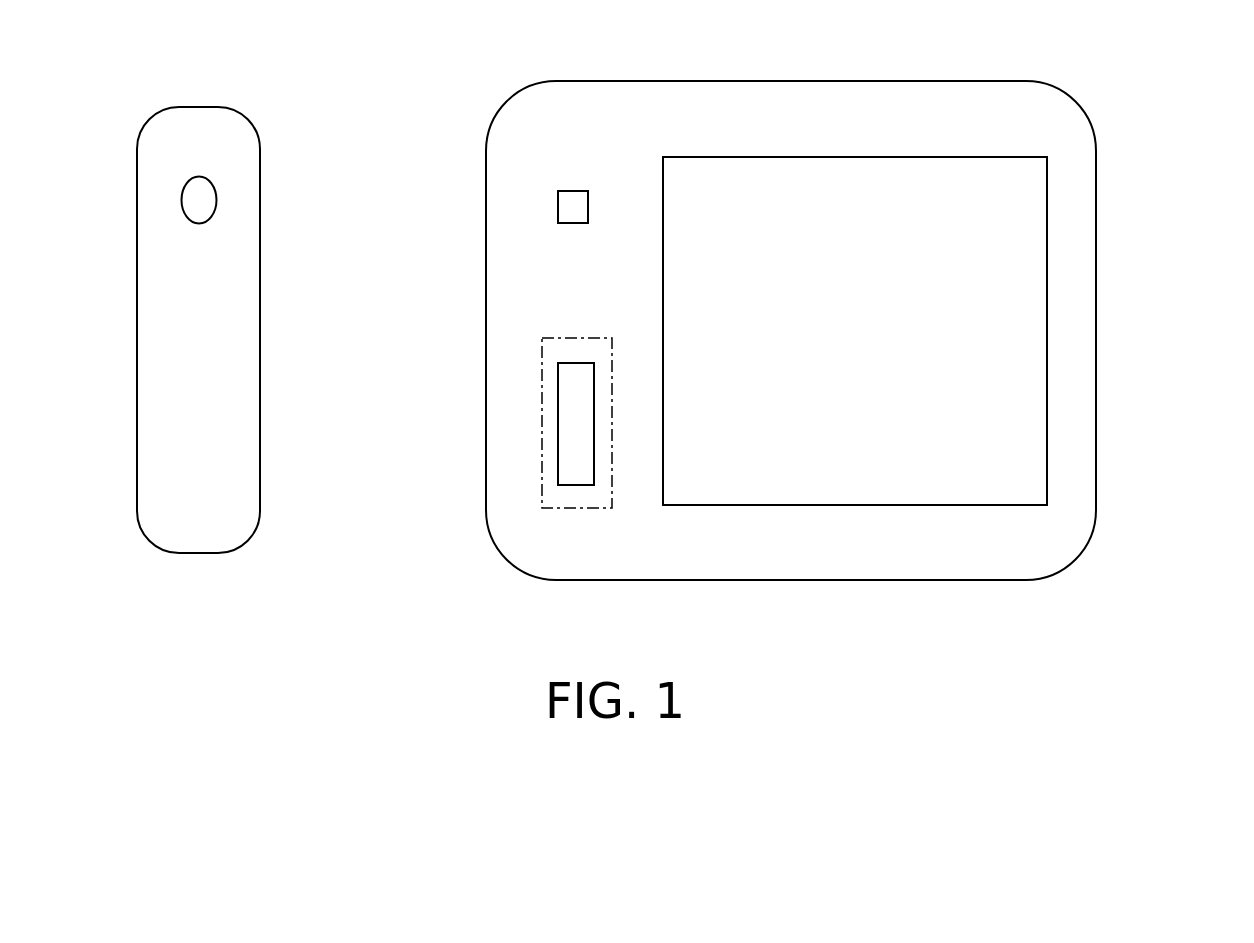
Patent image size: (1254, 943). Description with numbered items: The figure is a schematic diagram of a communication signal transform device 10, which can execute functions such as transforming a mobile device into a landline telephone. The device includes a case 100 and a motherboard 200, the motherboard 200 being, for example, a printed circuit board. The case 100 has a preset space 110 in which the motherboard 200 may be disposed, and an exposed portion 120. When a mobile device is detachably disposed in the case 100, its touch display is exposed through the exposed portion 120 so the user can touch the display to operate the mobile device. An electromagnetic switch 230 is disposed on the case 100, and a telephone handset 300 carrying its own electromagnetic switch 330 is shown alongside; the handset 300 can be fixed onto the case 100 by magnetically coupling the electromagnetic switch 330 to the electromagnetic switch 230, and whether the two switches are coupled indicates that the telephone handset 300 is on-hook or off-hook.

The communication signal transform device 10 is at (1232, 629).
The case 100 is at (812, 81).
The preset space 110 is at (542, 461).
The exposed portion 120 is at (1047, 273).
The motherboard 200 is at (558, 425).
The electromagnetic switch 230 is at (558, 207).
The telephone handset 300 is at (247, 117).
The electromagnetic switch 330 is at (203, 200).